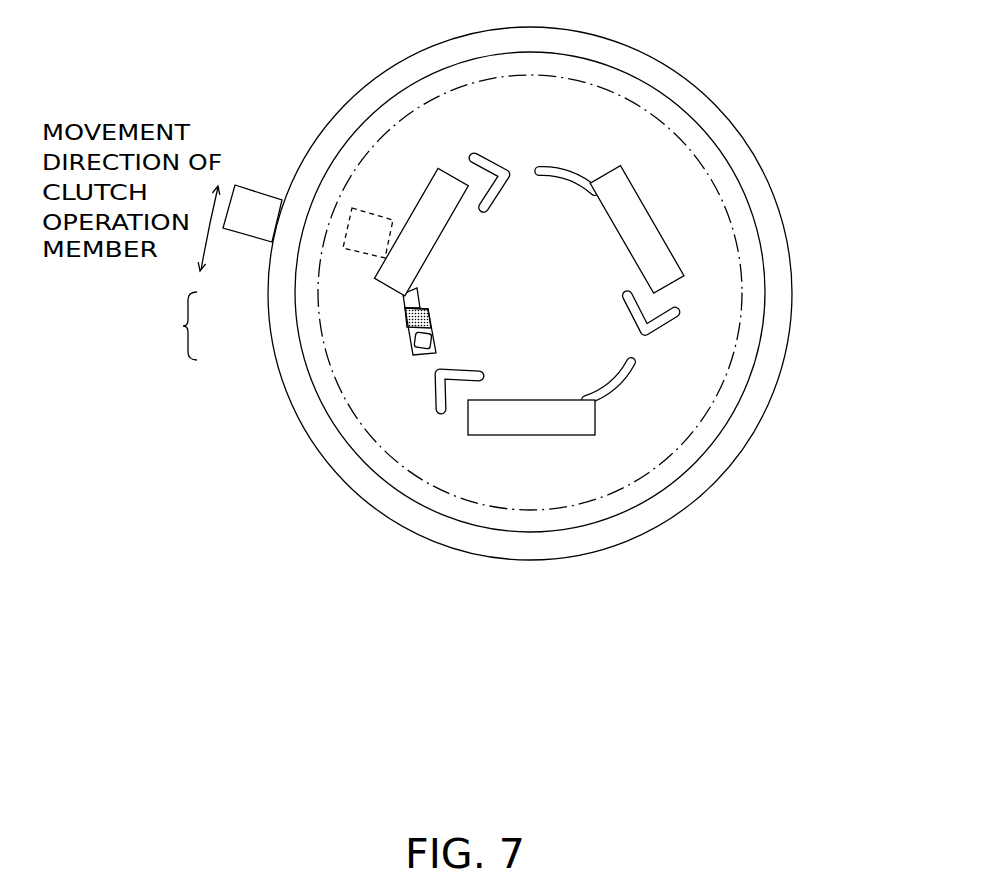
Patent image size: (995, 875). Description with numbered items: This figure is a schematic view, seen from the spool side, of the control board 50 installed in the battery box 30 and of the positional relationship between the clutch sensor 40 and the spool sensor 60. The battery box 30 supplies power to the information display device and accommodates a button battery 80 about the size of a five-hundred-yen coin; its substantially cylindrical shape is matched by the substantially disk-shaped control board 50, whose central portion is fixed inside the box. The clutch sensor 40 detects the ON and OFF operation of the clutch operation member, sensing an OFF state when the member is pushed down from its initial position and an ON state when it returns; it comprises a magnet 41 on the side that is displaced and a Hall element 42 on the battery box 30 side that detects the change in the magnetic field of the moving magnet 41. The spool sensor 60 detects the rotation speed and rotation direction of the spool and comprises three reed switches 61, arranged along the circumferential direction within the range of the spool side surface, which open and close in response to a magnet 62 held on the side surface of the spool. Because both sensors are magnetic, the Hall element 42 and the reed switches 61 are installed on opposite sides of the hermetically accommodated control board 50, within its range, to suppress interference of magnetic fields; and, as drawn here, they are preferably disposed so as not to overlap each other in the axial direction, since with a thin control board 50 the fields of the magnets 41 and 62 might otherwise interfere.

The battery box 30 is at (697, 107).
The control board 50 is at (755, 267).
The battery 80 is at (738, 350).
The clutch sensor 40 is at (270, 274).
The magnet 41 is at (252, 222).
The Hall element 42 is at (348, 250).
The spool sensor 60 is at (386, 309).
The reed switch 61 is at (427, 220).
The magnet 62 is at (404, 329).